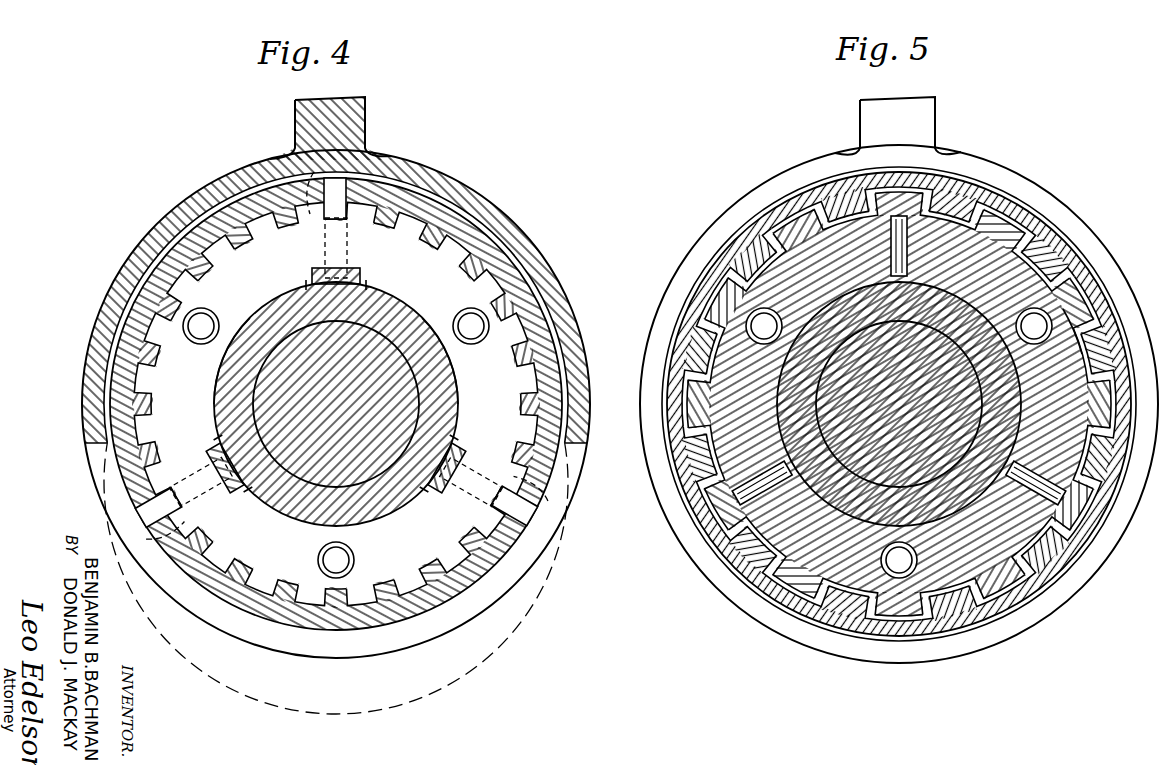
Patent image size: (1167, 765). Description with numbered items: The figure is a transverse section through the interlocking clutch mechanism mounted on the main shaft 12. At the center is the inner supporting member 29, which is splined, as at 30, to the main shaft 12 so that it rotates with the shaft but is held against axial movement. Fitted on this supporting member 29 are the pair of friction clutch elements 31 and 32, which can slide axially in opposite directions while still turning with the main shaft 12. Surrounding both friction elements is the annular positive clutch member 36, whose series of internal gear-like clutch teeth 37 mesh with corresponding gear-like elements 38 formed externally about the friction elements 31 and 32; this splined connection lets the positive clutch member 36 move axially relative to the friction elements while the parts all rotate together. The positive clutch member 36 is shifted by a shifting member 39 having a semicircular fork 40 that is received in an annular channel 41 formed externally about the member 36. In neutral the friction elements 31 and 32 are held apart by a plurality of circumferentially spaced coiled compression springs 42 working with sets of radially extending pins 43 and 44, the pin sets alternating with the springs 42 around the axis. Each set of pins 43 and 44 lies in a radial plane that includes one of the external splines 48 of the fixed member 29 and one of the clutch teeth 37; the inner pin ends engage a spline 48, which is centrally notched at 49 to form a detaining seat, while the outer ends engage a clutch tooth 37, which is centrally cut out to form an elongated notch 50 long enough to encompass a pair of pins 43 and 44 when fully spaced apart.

In FIG. 4, the main shaft 12 is at (379, 404).
In FIG. 5, the main shaft 12 is at (904, 499).
In FIG. 4, the inner supporting member 29 is at (336, 426).
In FIG. 5, the inner supporting member 29 is at (929, 351).
In FIG. 4, the spline 30 is at (215, 379).
In FIG. 4, the friction clutch element 31 is at (428, 333).
In FIG. 5, the friction clutch element 32 is at (1105, 310).
In FIG. 4, the positive clutch member 36 is at (364, 404).
In FIG. 5, the positive clutch member 36 is at (875, 404).
In FIG. 4, the internal clutch teeth 37 is at (363, 373).
In FIG. 5, the internal clutch teeth 37 is at (884, 359).
In FIG. 4, the gear-like elements 38 is at (336, 414).
In FIG. 4, the shifting member 39 is at (342, 128).
In FIG. 5, the shifting member 39 is at (903, 122).
In FIG. 4, the semicircular fork 40 is at (321, 404).
In FIG. 5, the semicircular fork 40 is at (899, 404).
In FIG. 4, the annular channel 41 is at (309, 578).
In FIG. 4, the coiled compression springs 42 is at (336, 434).
In FIG. 5, the coiled compression springs 42 is at (919, 418).
In FIG. 4, the radially extending pins 43 is at (335, 379).
In FIG. 5, the radially extending pins 44 is at (899, 394).
In FIG. 4, the external splines 48 is at (351, 390).
In FIG. 4, the notch or recess 49 is at (314, 388).
In FIG. 4, the elongated notch or recess 50 is at (317, 365).